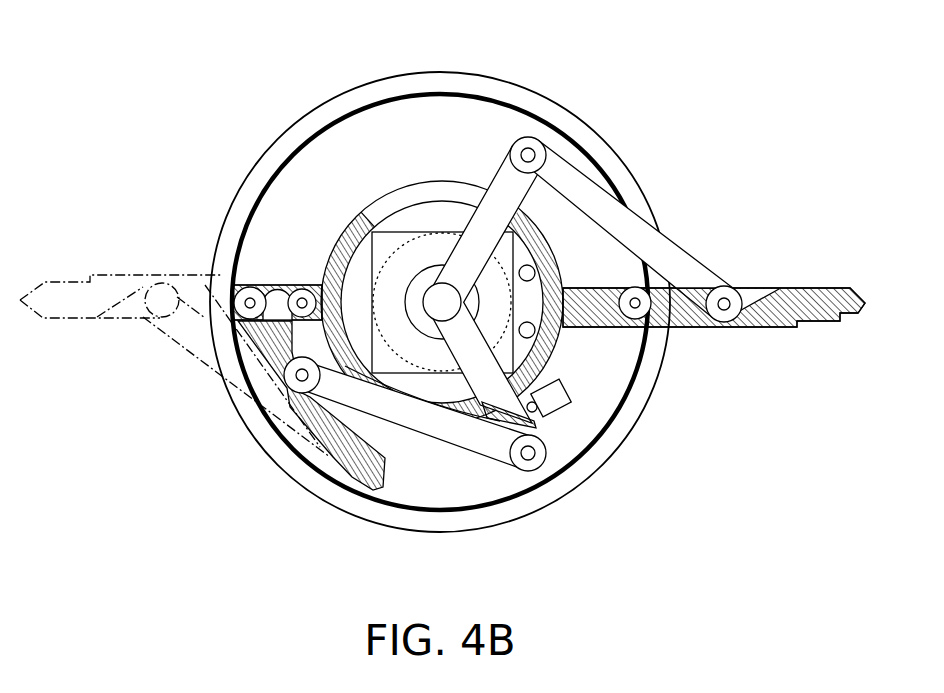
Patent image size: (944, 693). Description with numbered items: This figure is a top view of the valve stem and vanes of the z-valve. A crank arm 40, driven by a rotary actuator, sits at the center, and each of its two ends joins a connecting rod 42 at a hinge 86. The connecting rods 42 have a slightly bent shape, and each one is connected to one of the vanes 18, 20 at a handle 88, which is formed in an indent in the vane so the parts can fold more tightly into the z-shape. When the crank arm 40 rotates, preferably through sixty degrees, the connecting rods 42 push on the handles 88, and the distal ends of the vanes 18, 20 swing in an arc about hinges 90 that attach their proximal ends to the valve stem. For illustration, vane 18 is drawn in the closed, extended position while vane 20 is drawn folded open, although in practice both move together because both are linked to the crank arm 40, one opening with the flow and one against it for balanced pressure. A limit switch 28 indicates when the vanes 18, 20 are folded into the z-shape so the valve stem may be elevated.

The vane 18 is at (831, 290).
The vane 20 is at (332, 455).
The limit switch 28 is at (562, 400).
The crank arm 40 is at (496, 169).
The connecting rod 42 is at (647, 228).
The hinge 86 is at (540, 138).
The handle 88 is at (725, 286).
The hinge 90 is at (636, 322).